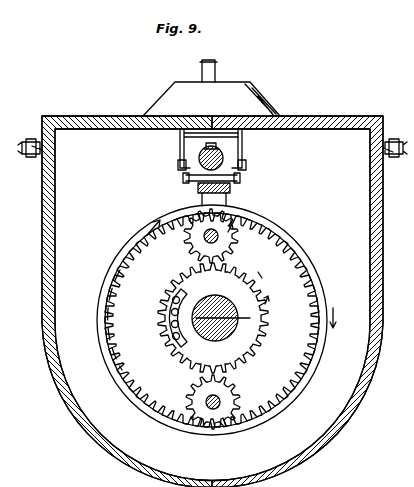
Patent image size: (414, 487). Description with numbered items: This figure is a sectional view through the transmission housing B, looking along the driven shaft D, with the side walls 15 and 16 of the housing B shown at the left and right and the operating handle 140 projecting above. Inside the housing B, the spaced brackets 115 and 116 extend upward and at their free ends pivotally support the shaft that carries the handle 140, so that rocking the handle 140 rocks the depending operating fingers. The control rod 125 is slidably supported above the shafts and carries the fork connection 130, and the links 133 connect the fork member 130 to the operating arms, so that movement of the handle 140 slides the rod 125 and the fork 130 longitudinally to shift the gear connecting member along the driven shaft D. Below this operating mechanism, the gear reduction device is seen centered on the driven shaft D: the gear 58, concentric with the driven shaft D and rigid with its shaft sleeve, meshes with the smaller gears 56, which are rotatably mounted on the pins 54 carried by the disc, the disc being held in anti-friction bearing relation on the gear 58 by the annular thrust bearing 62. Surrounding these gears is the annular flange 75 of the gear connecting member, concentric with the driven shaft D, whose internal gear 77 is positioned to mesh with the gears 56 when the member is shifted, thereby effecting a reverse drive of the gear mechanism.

The side wall 15 is at (42, 305).
The side wall 16 is at (383, 300).
The housing B is at (292, 118).
The handle 140 is at (215, 68).
The bracket 115 is at (180, 136).
The bracket 116 is at (244, 148).
The control rod 125 is at (185, 165).
The links 133 is at (200, 172).
The fork connection 130 is at (233, 190).
The annular flange 75 is at (270, 224).
The internal gear 77 is at (272, 238).
The pins 54 is at (211, 236).
The smaller gear 56 is at (255, 262).
The gear 58 is at (262, 278).
The annular thrust bearing 62 is at (172, 322).
The driven shaft D is at (232, 312).